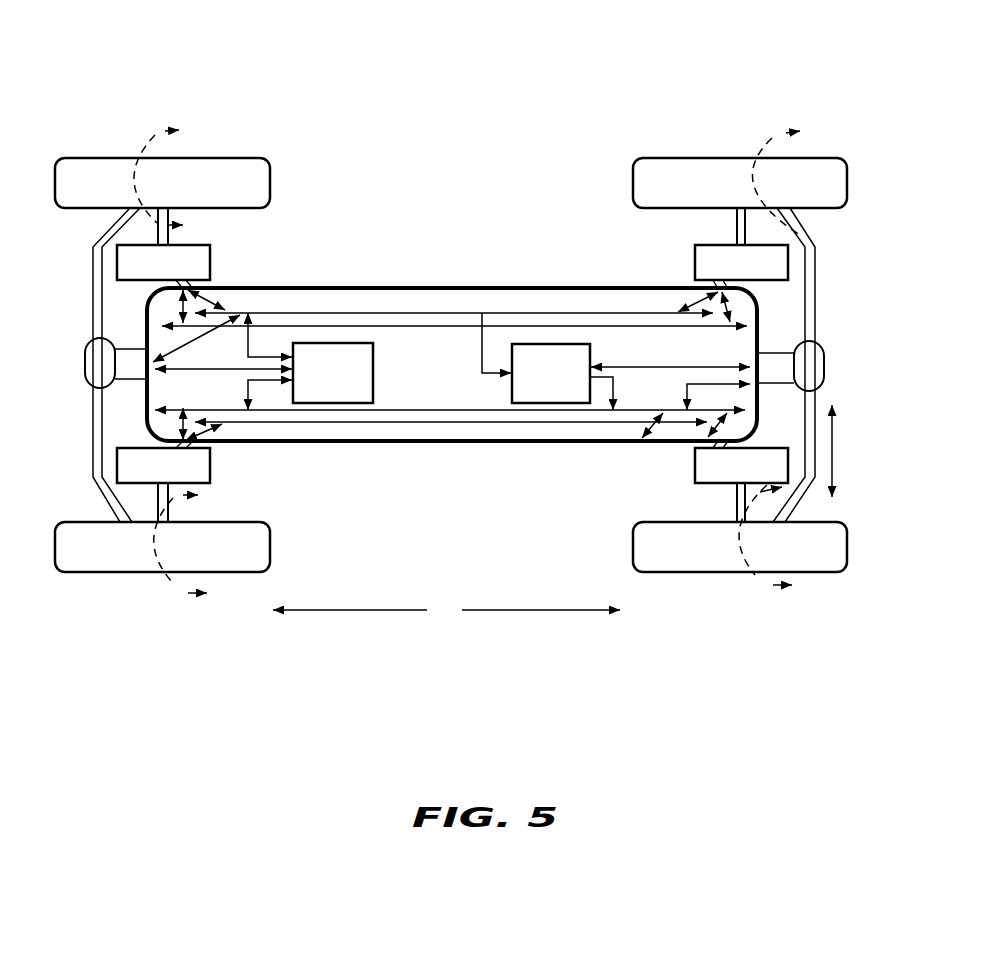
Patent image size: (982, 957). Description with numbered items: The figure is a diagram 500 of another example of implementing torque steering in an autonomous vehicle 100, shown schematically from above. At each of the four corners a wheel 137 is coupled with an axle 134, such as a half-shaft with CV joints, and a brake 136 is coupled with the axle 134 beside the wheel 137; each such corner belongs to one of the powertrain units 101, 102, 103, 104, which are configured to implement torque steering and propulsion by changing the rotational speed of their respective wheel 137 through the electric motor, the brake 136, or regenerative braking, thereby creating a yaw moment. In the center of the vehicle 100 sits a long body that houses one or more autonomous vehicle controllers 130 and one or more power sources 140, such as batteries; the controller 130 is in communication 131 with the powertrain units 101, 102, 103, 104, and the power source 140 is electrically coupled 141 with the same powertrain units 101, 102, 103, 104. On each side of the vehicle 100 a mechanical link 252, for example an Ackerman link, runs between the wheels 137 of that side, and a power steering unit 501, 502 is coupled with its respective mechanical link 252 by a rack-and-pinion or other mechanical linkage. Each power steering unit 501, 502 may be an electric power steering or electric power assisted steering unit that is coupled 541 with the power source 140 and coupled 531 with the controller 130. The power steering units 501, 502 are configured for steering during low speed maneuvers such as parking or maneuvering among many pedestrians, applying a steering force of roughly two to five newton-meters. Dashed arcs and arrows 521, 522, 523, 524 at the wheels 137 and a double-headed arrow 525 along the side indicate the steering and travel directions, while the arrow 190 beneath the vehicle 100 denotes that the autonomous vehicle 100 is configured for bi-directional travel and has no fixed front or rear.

The diagram 500 is at (224, 34).
The wheel 137 is at (96, 196).
The axle 134 is at (163, 233).
The brake 136 is at (181, 214).
The powertrain unit 102 is at (178, 274).
The powertrain unit 104 is at (756, 274).
The powertrain unit 101 is at (178, 477).
The powertrain unit 103 is at (756, 477).
The mechanical link 252 is at (93, 300).
The power steering unit 501 is at (93, 360).
The power steering unit 502 is at (813, 370).
The autonomous vehicle 100 is at (455, 359).
The communication 131 is at (558, 313).
The coupling with AV controller 531 is at (176, 349).
The coupling with power source 541 is at (184, 372).
The electrical coupling 141 is at (400, 410).
The power source 140 is at (346, 391).
The autonomous vehicle controller 130 is at (563, 391).
The wheel steering direction 521 is at (155, 135).
The wheel steering direction 522 is at (775, 140).
The wheel steering direction 523 is at (177, 589).
The wheel steering direction 524 is at (765, 584).
The longitudinal direction 525 is at (835, 456).
The arrow 190 is at (446, 609).